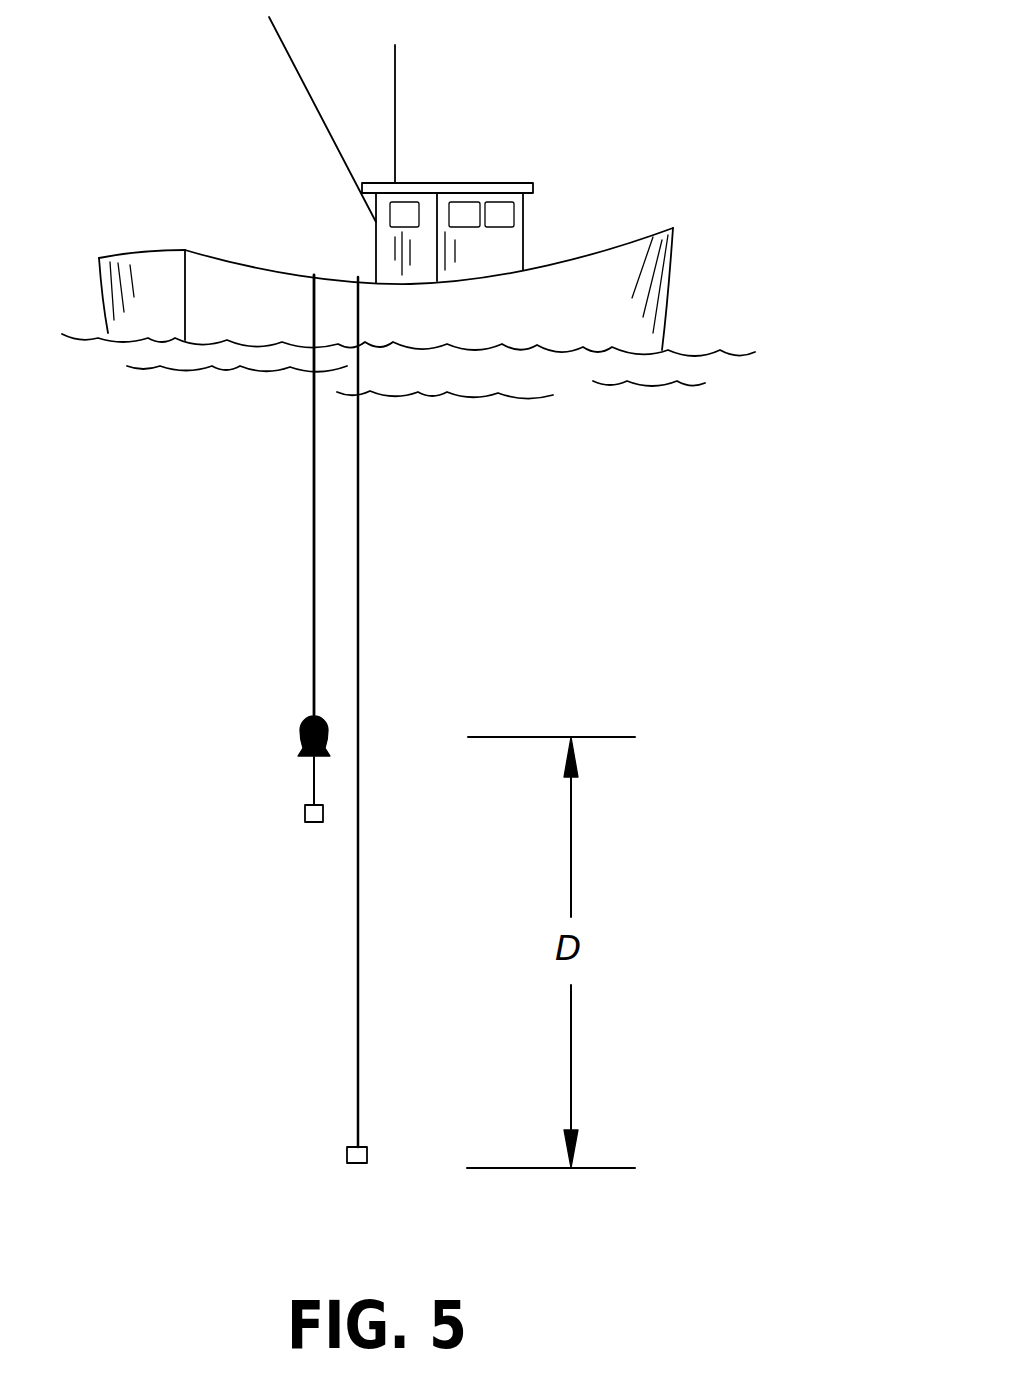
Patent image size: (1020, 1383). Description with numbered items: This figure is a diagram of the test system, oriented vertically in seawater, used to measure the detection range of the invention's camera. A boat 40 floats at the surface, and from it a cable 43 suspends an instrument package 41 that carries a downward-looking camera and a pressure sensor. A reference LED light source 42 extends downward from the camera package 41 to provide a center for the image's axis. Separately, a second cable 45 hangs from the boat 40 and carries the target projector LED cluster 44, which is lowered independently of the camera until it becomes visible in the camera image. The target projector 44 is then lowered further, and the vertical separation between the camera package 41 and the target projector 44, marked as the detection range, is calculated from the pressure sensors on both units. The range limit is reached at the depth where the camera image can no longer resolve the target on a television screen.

The boat 40 is at (653, 287).
The instrument package 41 is at (300, 722).
The reference LED light source 42 is at (310, 823).
The cable 43 is at (313, 512).
The target projector LED cluster 44 is at (345, 1153).
The cable 45 is at (360, 610).